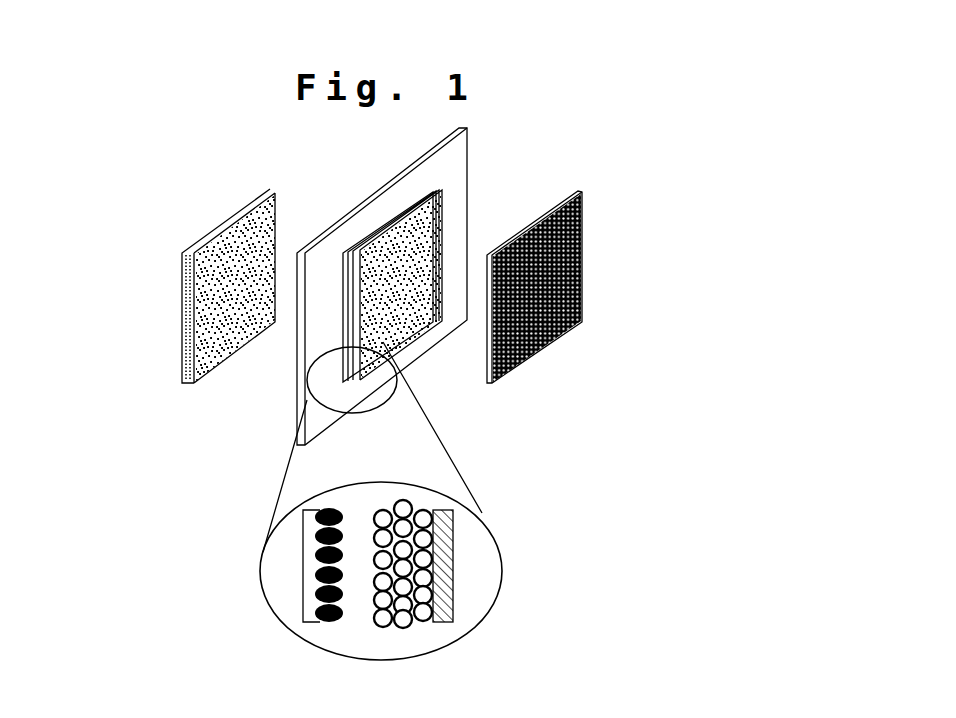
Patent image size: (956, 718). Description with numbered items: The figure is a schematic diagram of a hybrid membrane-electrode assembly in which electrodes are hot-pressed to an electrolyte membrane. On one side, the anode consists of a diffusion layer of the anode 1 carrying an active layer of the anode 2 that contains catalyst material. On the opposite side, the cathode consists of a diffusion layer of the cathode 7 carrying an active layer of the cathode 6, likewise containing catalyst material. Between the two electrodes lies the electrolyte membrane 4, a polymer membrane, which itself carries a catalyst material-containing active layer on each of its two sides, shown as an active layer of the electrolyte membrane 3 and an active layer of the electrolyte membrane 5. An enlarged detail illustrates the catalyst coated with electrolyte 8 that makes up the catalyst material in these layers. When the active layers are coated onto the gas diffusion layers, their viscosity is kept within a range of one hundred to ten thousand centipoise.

The diffusion layer of the anode 1 is at (180, 353).
The active layer of the anode 2 is at (214, 353).
The active layer of the electrolyte membrane 3 is at (340, 280).
The electrolyte membrane 4 is at (308, 505).
The active layer of the electrolyte membrane 5 is at (379, 280).
The active layer of the cathode 6 is at (483, 364).
The diffusion layer of the cathode 7 is at (457, 555).
The catalyst coated with electrolyte 8 is at (414, 629).